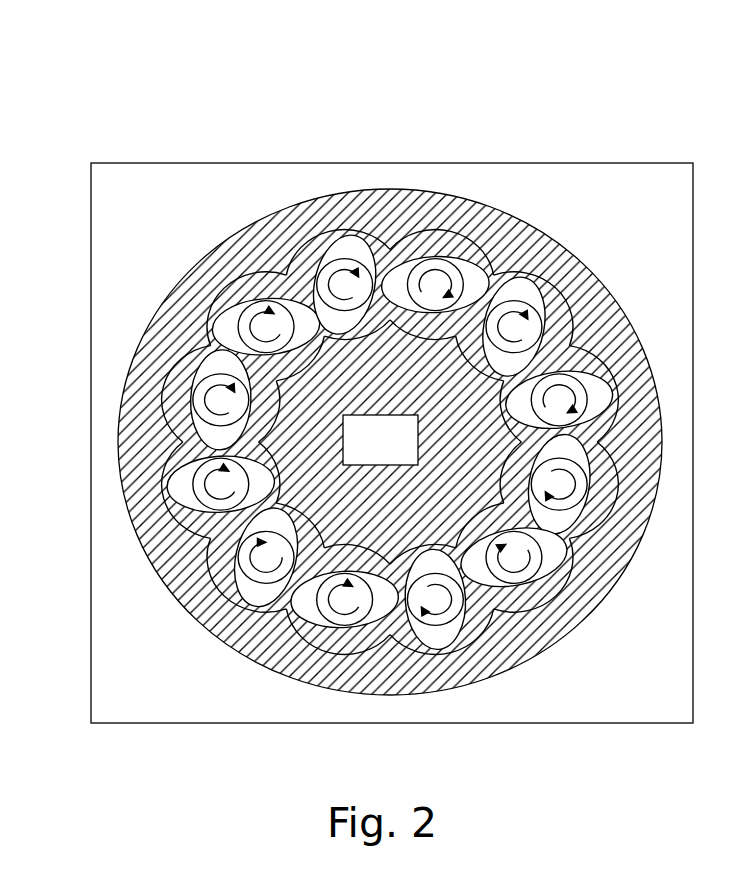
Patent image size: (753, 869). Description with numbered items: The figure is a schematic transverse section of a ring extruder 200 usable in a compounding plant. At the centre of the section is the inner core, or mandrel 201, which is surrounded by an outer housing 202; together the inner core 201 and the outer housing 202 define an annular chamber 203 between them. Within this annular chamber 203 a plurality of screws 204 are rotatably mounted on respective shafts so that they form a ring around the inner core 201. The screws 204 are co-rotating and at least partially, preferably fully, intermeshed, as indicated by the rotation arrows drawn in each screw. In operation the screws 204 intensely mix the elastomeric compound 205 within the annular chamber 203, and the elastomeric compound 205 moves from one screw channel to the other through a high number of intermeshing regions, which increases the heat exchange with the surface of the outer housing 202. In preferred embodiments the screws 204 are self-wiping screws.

The ring extruder 200 is at (165, 110).
The inner core 201 is at (380, 440).
The outer housing 202 is at (440, 207).
The annular chamber 203 is at (463, 254).
The screws 204 is at (217, 400).
The elastomeric compound 205 is at (252, 287).